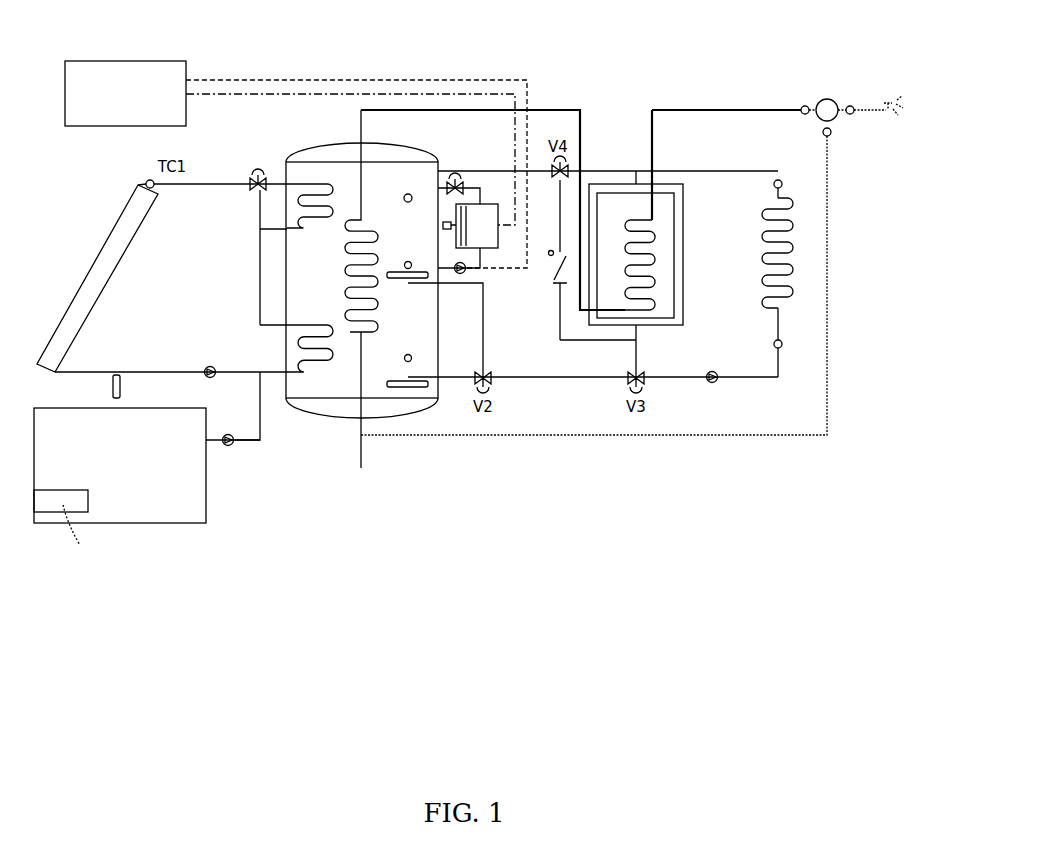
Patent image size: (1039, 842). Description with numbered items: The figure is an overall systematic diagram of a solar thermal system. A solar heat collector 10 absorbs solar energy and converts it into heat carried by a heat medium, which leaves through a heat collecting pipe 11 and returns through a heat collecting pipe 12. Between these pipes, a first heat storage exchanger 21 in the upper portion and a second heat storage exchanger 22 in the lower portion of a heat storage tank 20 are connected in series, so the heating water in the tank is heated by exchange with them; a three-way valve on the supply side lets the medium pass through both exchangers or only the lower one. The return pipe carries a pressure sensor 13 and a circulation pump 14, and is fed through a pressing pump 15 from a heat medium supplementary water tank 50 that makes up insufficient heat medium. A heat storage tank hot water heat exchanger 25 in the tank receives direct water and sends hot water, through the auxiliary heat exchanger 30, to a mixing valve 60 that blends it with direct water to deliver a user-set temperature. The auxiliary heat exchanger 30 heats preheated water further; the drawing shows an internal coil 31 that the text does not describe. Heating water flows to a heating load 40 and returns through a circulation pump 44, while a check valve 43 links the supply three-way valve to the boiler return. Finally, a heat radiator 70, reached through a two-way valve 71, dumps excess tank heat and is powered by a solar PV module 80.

The solar heat collector 10 is at (105, 255).
The heat collecting pipe 11 is at (212, 190).
The heat collecting pipe 12 is at (153, 371).
The pressure sensor 13 is at (112, 386).
The circulation pump 14 is at (210, 366).
The pressing pump 15 is at (232, 446).
The heat storage tank 20 is at (337, 408).
The first heat storage exchanger 21 is at (318, 237).
The second heat storage exchanger 22 is at (340, 350).
The heat storage tank hot water heat exchanger 25 is at (378, 292).
The auxiliary heat exchanger 30 is at (684, 316).
The heat exchanger coil 31 is at (660, 252).
The heating load 40 is at (800, 265).
The check valve 43 is at (556, 286).
The circulation pump 44 is at (710, 386).
The heat medium supplementary water tank 50 is at (207, 505).
The mixing valve 60 is at (826, 98).
The heat radiator 70 is at (486, 248).
The two-way valve 71 is at (486, 168).
The solar PV module 80 is at (130, 60).